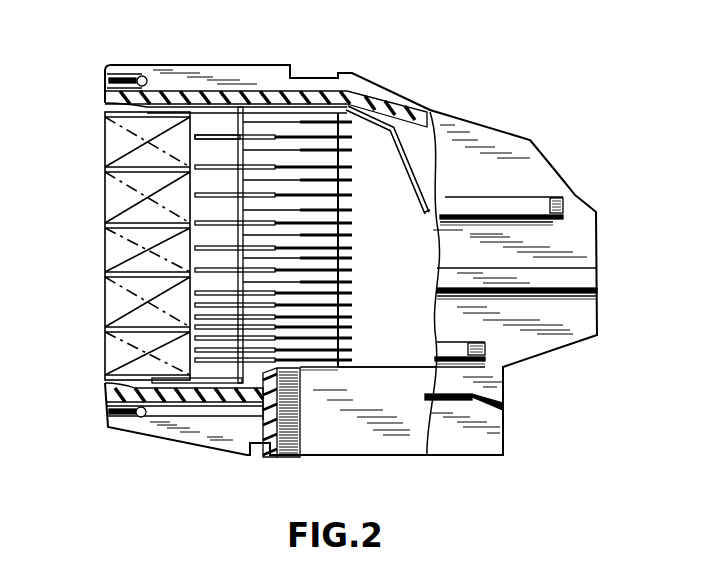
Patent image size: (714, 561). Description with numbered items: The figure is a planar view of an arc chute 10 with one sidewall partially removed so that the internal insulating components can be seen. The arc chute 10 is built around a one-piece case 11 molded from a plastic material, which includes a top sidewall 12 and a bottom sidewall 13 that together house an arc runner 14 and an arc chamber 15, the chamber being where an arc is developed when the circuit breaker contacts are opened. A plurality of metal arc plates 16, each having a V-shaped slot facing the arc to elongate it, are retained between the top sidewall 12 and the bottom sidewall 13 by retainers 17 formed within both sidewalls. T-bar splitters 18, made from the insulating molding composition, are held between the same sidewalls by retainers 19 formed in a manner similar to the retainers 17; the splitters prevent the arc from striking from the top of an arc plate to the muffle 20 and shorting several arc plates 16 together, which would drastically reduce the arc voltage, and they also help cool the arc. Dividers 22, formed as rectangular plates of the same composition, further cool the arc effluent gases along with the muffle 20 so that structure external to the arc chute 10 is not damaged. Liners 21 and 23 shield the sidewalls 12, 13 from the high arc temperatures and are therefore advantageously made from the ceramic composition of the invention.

The arc chute 10 is at (480, 498).
The one-piece case 11 is at (600, 302).
The top sidewall 12 is at (493, 423).
The bottom sidewall 13 is at (375, 428).
The arc runner 14 is at (407, 157).
The arc chamber 15 is at (388, 257).
The arc plates 16 is at (352, 282).
The retainers 17 is at (317, 363).
The T-bar splitters 18 is at (203, 137).
The retainers 19 is at (303, 121).
The muffle 20 is at (117, 355).
The liner 21 is at (218, 378).
The dividers 22 is at (107, 168).
The liner 23 is at (398, 347).